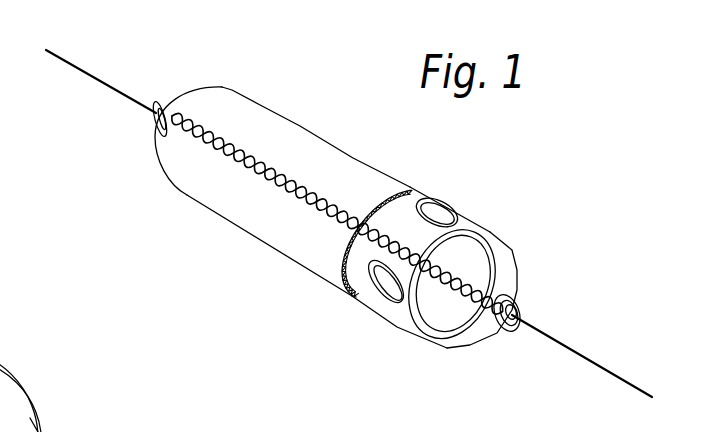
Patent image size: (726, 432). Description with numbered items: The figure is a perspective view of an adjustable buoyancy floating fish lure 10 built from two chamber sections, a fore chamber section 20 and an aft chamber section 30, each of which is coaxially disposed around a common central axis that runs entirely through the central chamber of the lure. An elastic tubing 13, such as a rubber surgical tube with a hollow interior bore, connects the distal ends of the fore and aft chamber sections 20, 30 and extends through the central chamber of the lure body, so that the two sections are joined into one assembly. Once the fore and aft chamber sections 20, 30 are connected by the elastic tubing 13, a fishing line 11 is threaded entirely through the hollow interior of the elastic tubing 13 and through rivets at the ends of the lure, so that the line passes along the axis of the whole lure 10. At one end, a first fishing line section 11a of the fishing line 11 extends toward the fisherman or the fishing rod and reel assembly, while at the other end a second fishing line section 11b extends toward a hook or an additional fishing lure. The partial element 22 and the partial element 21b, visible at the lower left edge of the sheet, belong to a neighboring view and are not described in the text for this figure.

The device assembly 10 is at (143, 208).
The wire 11 is at (573, 365).
The first wire end 11a is at (600, 363).
The second wire end 11b is at (113, 88).
The twisted wire strand 13 is at (324, 214).
The cage housing 20 is at (505, 262).
The collar ring 22 is at (17, 378).
The housing portion 21b is at (73, 425).
The tube sleeve 30 is at (255, 108).